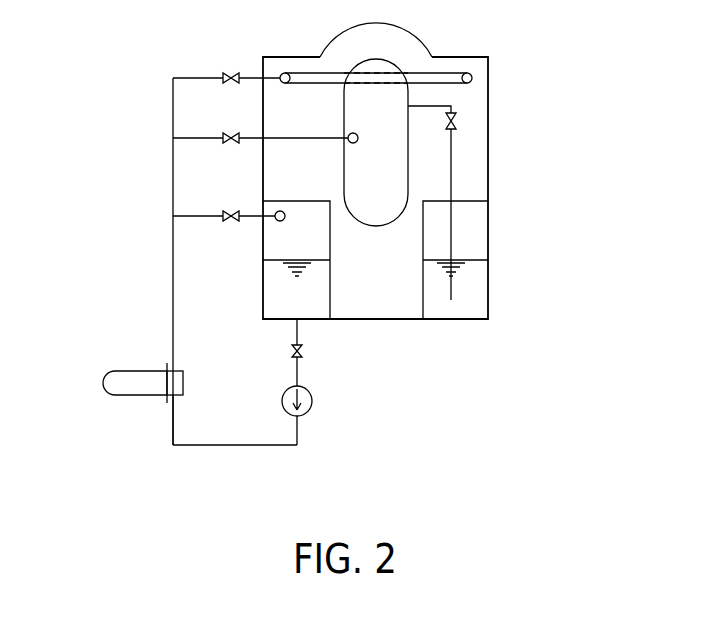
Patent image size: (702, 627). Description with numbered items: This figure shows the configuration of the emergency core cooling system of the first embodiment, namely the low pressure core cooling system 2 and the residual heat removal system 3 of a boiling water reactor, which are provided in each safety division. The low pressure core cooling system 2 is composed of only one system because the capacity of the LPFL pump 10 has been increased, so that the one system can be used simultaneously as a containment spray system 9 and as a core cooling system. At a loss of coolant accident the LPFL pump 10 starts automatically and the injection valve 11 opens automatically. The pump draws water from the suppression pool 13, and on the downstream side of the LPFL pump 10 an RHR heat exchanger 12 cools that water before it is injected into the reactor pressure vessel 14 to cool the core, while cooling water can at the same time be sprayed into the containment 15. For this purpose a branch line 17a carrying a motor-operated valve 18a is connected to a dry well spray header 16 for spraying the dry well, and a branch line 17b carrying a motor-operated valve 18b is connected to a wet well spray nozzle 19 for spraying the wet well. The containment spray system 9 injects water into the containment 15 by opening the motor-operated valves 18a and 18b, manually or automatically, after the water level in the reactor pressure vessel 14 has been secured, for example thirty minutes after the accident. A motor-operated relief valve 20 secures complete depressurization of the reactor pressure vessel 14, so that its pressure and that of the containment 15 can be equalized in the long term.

The low pressure core cooling system 2 is at (233, 446).
The residual heat removal system 3 is at (173, 417).
The containment spray system 9 is at (197, 76).
The LPFL pump 10 is at (312, 400).
The injection valve 11 is at (232, 131).
The RHR heat exchanger 12 is at (103, 383).
The suppression pool 13 is at (268, 288).
The reactor pressure vessel 14 is at (408, 172).
The containment 15 is at (488, 148).
The dry well spray header 16 is at (442, 73).
The branch line 17a is at (173, 107).
The branch line 17b is at (197, 215).
The motor-operated valve 18a is at (232, 71).
The motor-operated valve 18b is at (232, 210).
The wet well spray nozzle 19 is at (280, 210).
The motor-operated relief valve 20 is at (457, 120).